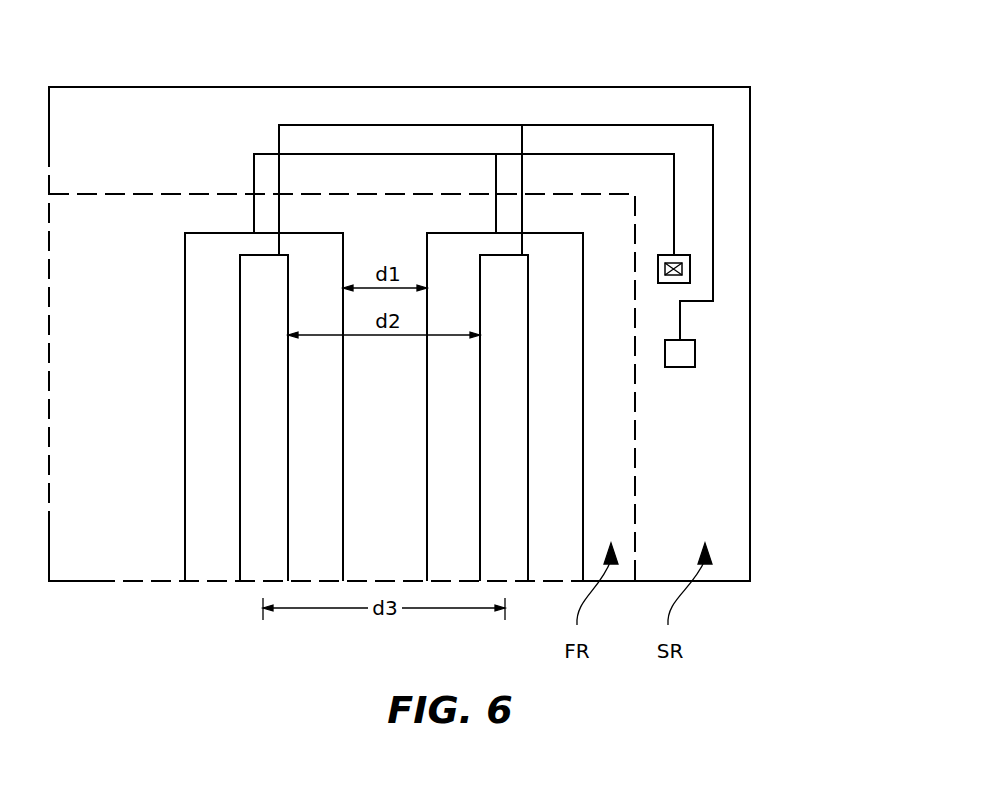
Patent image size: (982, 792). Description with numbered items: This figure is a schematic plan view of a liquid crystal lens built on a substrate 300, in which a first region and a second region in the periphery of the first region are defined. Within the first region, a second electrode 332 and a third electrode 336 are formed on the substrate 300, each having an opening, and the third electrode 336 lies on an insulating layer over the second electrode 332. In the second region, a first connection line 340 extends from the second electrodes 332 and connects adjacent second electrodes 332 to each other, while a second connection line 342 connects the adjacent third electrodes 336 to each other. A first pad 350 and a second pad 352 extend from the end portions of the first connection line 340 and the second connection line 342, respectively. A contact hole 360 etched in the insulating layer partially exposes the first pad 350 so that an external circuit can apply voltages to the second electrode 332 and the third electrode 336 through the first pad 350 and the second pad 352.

The substrate 300 is at (750, 463).
The second electrode 332 is at (185, 367).
The third electrode 336 is at (239, 450).
The first connection line 340 is at (375, 154).
The second connection line 342 is at (465, 125).
The first pad 350 is at (691, 269).
The second pad 352 is at (696, 352).
The contact hole 360 is at (673, 277).